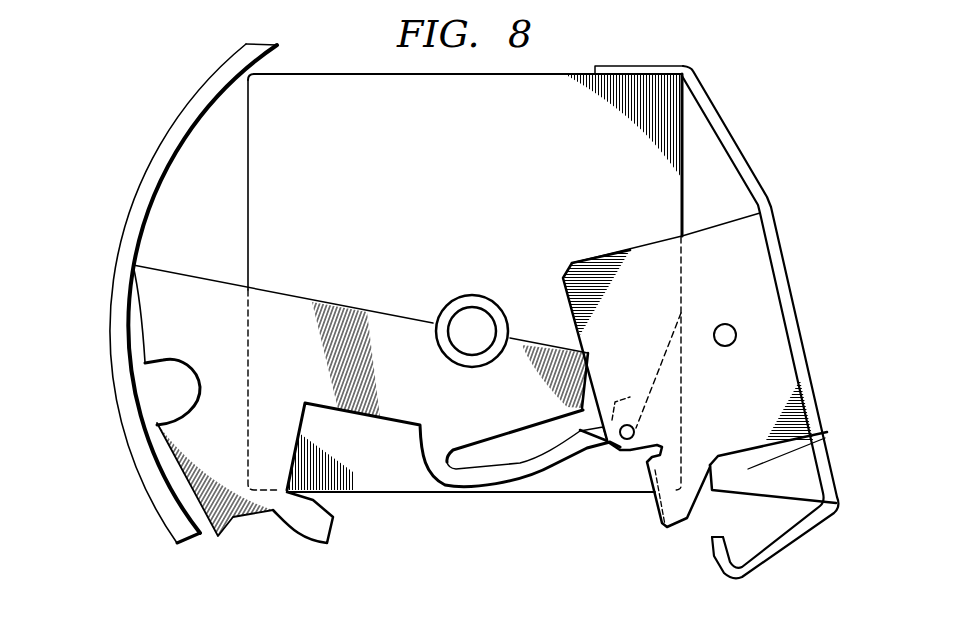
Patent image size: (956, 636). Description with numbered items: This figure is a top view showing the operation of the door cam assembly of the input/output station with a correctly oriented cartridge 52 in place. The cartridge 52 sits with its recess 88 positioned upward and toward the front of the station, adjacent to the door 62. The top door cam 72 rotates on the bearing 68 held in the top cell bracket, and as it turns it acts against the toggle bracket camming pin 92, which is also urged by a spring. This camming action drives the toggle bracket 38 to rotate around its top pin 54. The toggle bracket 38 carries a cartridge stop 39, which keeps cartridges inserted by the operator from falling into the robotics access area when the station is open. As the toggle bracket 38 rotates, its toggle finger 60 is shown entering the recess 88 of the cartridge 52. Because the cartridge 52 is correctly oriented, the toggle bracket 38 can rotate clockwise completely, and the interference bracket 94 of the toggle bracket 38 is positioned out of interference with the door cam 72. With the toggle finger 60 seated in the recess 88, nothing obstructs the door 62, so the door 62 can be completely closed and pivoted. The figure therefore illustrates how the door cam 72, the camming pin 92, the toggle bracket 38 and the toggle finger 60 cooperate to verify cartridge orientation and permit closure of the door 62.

The toggle bracket 38 is at (787, 236).
The cartridge stop 39 is at (637, 64).
The cartridge 52 is at (481, 129).
The top pin 54 is at (724, 324).
The toggle finger 60 is at (733, 482).
The door 62 is at (128, 437).
The bearing 68 is at (470, 327).
The top door cam 72 is at (390, 323).
The recess 88 is at (676, 400).
The toggle bracket camming pin 92 is at (628, 423).
The interference bracket 94 is at (662, 512).